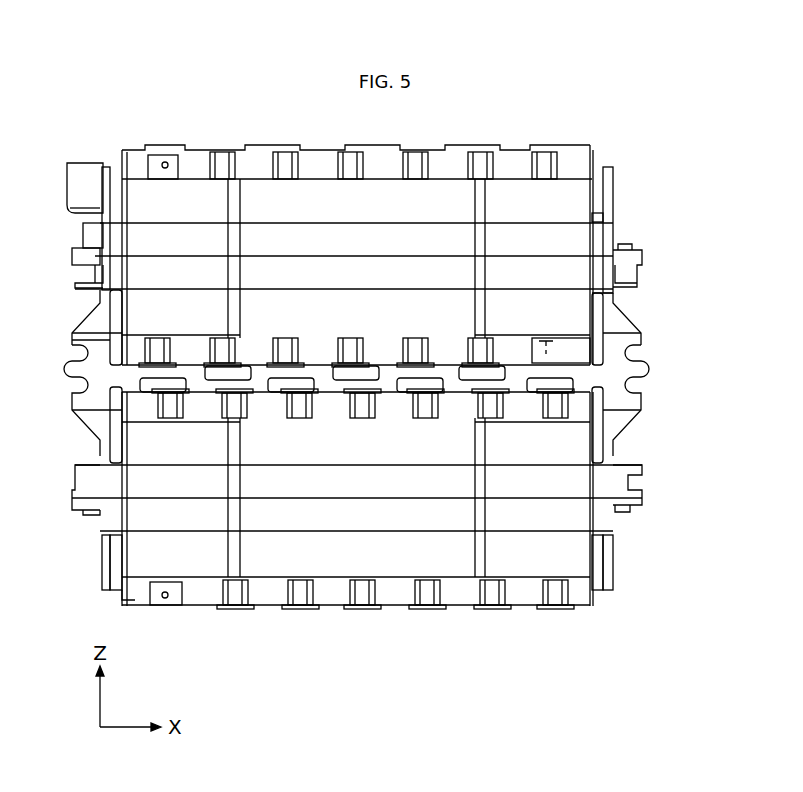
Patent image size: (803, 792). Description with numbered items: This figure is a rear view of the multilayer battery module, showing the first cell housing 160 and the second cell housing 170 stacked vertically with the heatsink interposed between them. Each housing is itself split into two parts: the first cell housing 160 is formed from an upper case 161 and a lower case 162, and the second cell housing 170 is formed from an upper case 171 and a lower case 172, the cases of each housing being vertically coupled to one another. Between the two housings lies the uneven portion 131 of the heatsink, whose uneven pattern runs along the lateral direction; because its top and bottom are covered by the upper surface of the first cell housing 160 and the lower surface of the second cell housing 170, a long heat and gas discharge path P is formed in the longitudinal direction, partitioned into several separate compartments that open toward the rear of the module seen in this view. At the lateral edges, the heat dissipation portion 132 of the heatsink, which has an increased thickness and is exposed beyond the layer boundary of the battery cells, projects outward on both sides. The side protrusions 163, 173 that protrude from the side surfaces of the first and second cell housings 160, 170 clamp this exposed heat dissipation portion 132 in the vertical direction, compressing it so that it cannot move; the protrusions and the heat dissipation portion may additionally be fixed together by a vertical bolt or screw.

The second cell housing 170 is at (705, 218).
The upper case 171 is at (578, 238).
The lower case 172 is at (600, 276).
The side protrusion 173 is at (626, 326).
The uneven portion 131 is at (157, 372).
The heat dissipation portion 132 is at (637, 372).
The side protrusion 163 is at (628, 426).
The first cell housing 160 is at (705, 470).
The upper case 161 is at (613, 525).
The lower case 162 is at (598, 481).
The heat and gas discharge path P is at (222, 373).